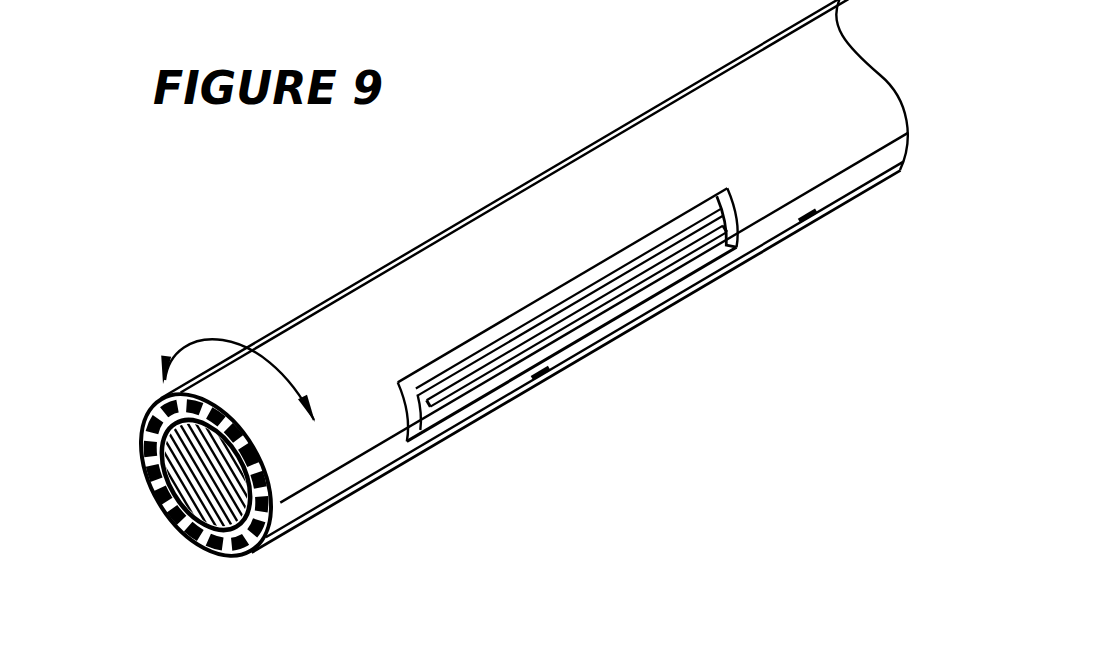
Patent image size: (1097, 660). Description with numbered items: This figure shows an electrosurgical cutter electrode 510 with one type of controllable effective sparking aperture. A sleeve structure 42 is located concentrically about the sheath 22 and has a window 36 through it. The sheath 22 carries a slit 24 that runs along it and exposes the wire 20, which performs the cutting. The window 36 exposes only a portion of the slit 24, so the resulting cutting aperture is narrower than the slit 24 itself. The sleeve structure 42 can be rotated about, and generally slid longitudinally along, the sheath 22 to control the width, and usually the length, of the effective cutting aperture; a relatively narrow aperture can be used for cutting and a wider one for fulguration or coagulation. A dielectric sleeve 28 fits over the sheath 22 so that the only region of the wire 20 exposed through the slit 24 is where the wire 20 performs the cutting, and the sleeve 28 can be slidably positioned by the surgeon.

The electrosurgical cutter electrode 510 is at (292, 236).
The sleeve structure 42 is at (338, 473).
The window 36 is at (540, 370).
The slit 24 is at (650, 282).
The sheath 22 is at (147, 450).
The dielectric sleeve 28 is at (213, 543).
The wire 20 is at (192, 481).